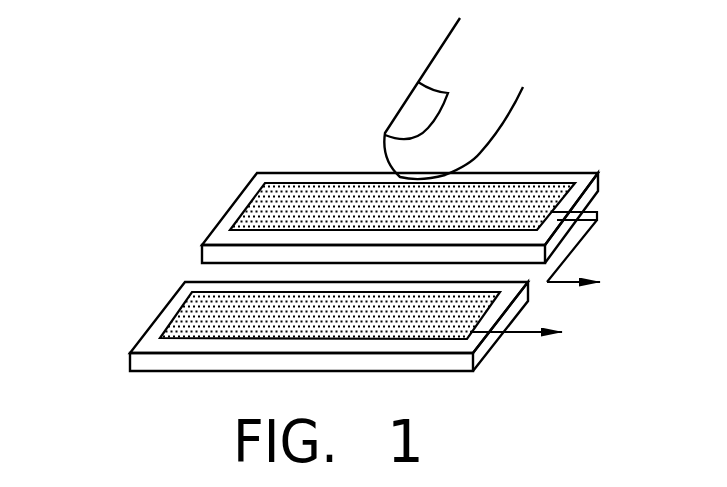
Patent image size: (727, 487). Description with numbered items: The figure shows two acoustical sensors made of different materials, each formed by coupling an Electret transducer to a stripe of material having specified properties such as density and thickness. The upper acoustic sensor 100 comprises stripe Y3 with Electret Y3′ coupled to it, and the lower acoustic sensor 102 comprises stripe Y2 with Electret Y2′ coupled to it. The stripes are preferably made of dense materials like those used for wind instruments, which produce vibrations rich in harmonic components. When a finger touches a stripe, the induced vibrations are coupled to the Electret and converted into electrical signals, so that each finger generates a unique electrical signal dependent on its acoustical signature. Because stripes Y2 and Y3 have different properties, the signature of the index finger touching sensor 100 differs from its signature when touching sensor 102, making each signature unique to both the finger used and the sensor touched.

The acoustic sensor 100 is at (590, 168).
The acoustic sensor 102 is at (493, 353).
The stripe Y3 is at (227, 203).
The Electret Y3′ is at (292, 195).
The stripe Y2 is at (145, 325).
The Electret Y2′ is at (200, 310).